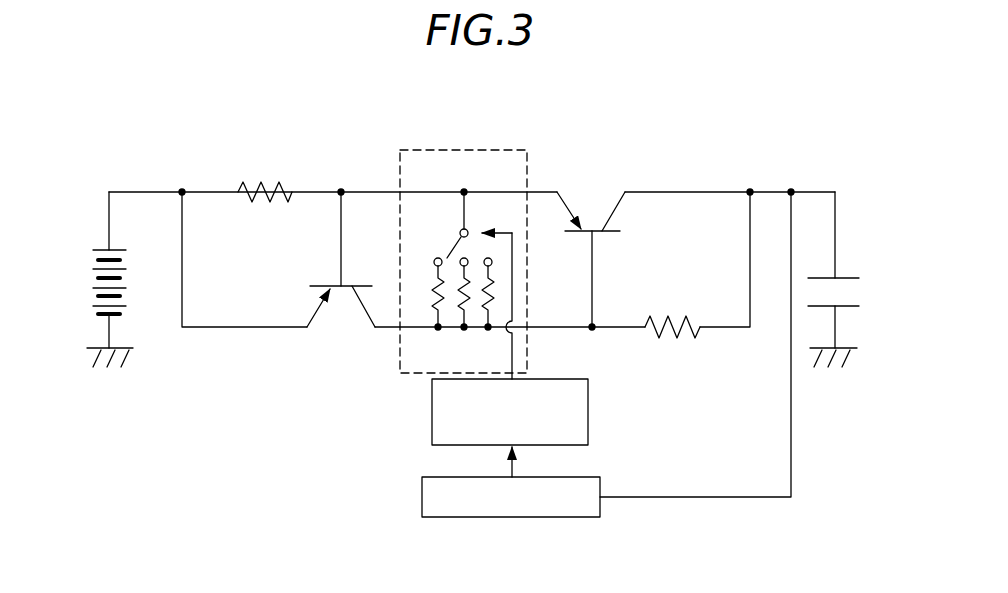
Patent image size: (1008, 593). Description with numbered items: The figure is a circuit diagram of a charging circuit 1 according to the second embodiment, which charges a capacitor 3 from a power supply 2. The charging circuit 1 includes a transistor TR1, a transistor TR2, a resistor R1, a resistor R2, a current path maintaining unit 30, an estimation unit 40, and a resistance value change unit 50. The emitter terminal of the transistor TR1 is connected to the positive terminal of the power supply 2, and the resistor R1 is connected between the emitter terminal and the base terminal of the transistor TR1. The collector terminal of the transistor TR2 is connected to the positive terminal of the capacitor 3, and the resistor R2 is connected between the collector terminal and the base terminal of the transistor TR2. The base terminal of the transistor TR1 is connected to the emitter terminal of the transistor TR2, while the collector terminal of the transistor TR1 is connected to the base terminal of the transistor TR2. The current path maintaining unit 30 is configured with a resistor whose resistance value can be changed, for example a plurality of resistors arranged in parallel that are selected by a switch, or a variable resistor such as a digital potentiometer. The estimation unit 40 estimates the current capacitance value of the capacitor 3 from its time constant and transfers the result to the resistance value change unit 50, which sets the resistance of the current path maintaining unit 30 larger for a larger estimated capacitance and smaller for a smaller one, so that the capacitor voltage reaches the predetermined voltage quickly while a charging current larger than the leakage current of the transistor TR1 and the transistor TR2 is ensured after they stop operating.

The charging circuit 1 is at (787, 172).
The power supply 2 is at (102, 247).
The capacitor 3 is at (845, 275).
The current path maintaining unit 30 is at (452, 148).
The estimation unit 40 is at (422, 492).
The resistance value change unit 50 is at (432, 421).
The resistor R1 is at (265, 206).
The resistor R2 is at (672, 315).
The transistor TR1 is at (318, 259).
The transistor TR2 is at (610, 259).